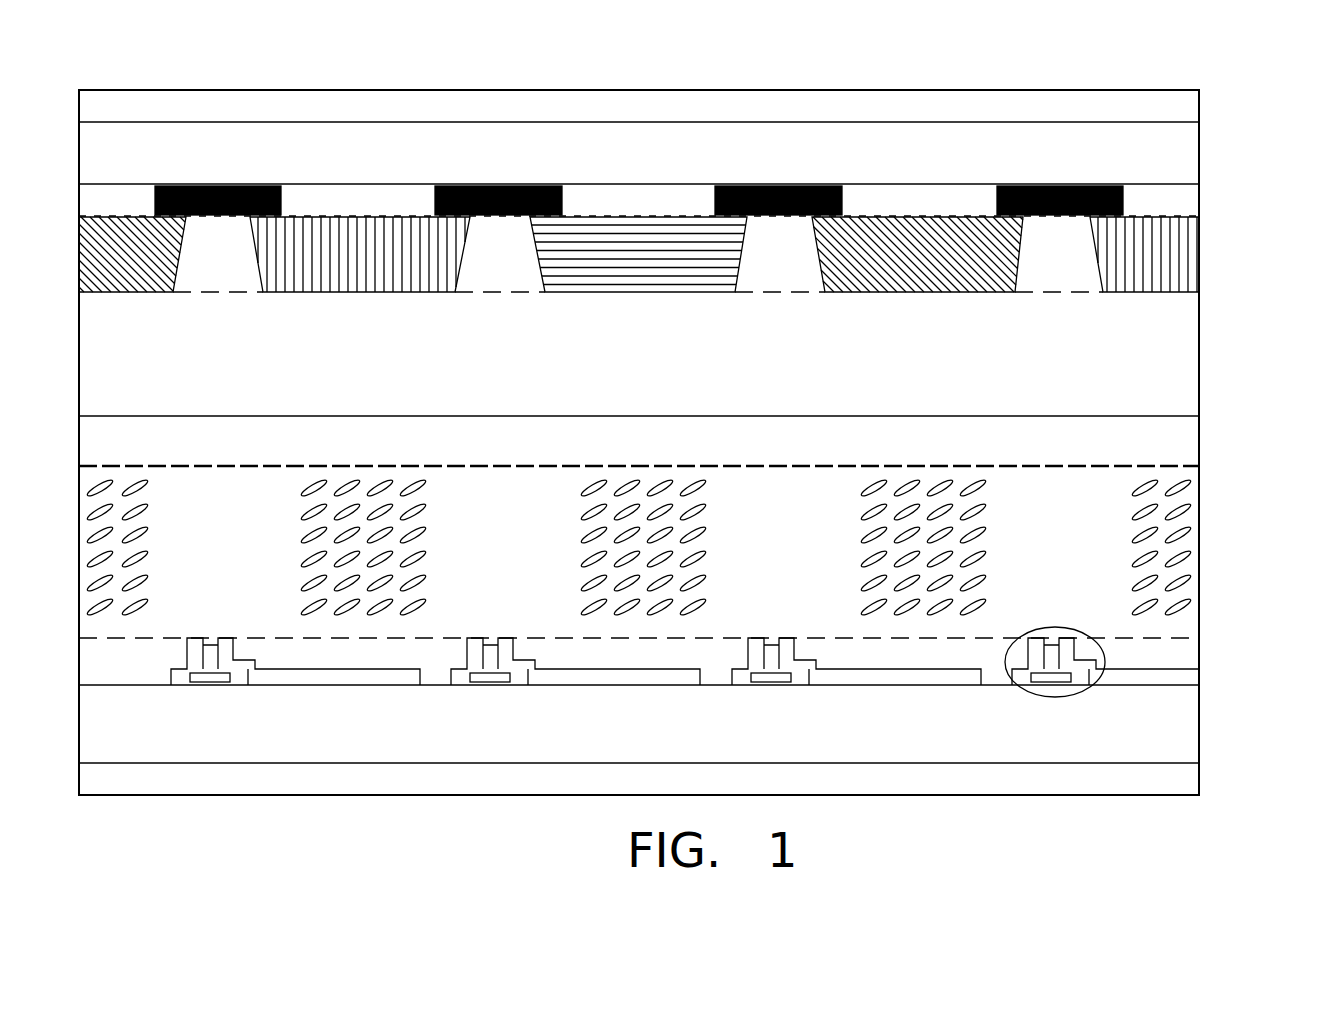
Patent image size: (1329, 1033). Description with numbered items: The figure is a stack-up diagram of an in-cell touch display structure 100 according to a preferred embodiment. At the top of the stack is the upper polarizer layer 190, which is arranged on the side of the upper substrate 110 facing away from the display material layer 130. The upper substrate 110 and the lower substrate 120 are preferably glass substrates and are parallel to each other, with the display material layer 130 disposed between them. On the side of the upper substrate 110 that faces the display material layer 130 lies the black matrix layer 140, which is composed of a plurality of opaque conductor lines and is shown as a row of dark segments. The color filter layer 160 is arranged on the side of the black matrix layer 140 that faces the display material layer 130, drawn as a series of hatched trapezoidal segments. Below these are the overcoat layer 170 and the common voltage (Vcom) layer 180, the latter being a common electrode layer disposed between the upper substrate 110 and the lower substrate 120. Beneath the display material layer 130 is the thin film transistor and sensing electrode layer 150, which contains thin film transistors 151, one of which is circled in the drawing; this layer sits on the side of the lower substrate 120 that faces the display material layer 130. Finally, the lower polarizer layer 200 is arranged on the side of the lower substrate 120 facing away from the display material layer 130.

The in-cell touch display structure 100 is at (221, 73).
The upper polarizer layer 190 is at (1183, 106).
The upper substrate 110 is at (1183, 146).
The black matrix layer 140 is at (1177, 193).
The color filter layer 160 is at (1152, 262).
The overcoat layer 170 is at (1167, 333).
The common voltage (Vcom) layer 180 is at (1128, 442).
The display material layer 130 is at (1170, 543).
The thin film transistor and sensing electrode layer 150 is at (1167, 658).
The thin film transistor 151 is at (1055, 698).
The lower substrate 120 is at (1183, 730).
The lower polarizer layer 200 is at (1183, 781).